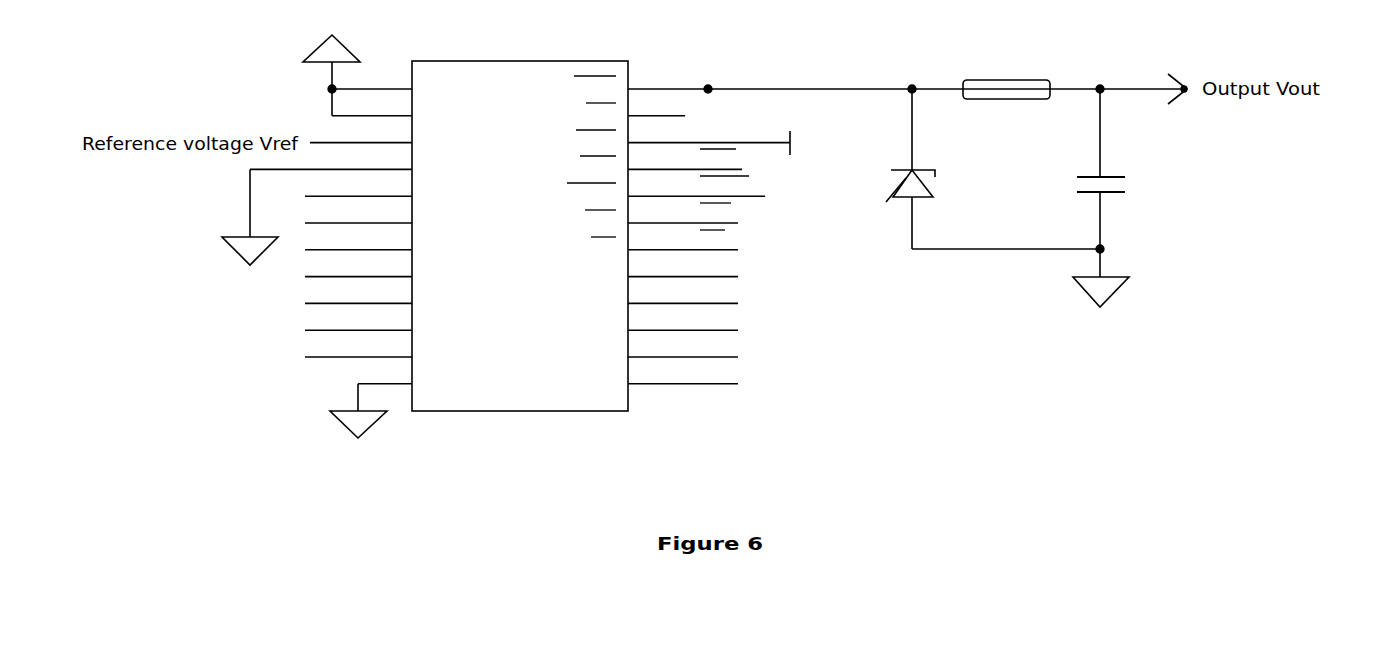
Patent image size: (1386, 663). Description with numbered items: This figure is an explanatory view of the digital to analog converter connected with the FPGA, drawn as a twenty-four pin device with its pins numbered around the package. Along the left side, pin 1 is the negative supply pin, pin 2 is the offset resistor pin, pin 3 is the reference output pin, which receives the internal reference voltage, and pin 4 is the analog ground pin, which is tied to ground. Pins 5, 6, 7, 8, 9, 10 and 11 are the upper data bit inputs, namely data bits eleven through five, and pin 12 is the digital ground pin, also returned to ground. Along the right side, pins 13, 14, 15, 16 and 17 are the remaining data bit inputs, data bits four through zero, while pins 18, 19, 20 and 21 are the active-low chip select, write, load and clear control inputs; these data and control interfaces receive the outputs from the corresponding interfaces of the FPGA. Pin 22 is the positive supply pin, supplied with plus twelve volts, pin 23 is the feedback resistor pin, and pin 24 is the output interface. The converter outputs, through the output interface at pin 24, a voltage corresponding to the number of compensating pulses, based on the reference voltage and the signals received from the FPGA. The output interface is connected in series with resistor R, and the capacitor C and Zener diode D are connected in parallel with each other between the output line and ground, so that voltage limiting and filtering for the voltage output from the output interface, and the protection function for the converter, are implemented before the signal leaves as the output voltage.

The VSS pin 1 is at (392, 84).
The Rofs pin 2 is at (394, 111).
The REFout pin (reference voltage Vref input) 3 is at (395, 138).
The AGND pin 4 is at (360, 165).
The DB11 pin 5 is at (386, 192).
The DB10 pin 6 is at (386, 219).
The DB9 pin 7 is at (380, 246).
The DB8 pin 8 is at (380, 273).
The DB7 pin 9 is at (380, 299).
The DB6 pin 10 is at (380, 326).
The DB5 pin 11 is at (380, 353).
The DGND pin 12 is at (415, 380).
The DB4 pin 13 is at (658, 380).
The DB3 pin 14 is at (658, 353).
The DB2 pin 15 is at (658, 326).
The DB1 pin 16 is at (658, 299).
The DB0 pin 17 is at (658, 273).
The CS pin 18 is at (664, 246).
The WR pin 19 is at (661, 219).
The LDAC pin 20 is at (666, 192).
The CLR pin 21 is at (661, 165).
The VDD pin (+12V) 22 is at (713, 138).
The Rfb pin 23 is at (635, 111).
The Vout pin 24 is at (837, 84).
The resistor R is at (979, 77).
The Zener diode D is at (915, 169).
The capacitor C is at (1111, 167).